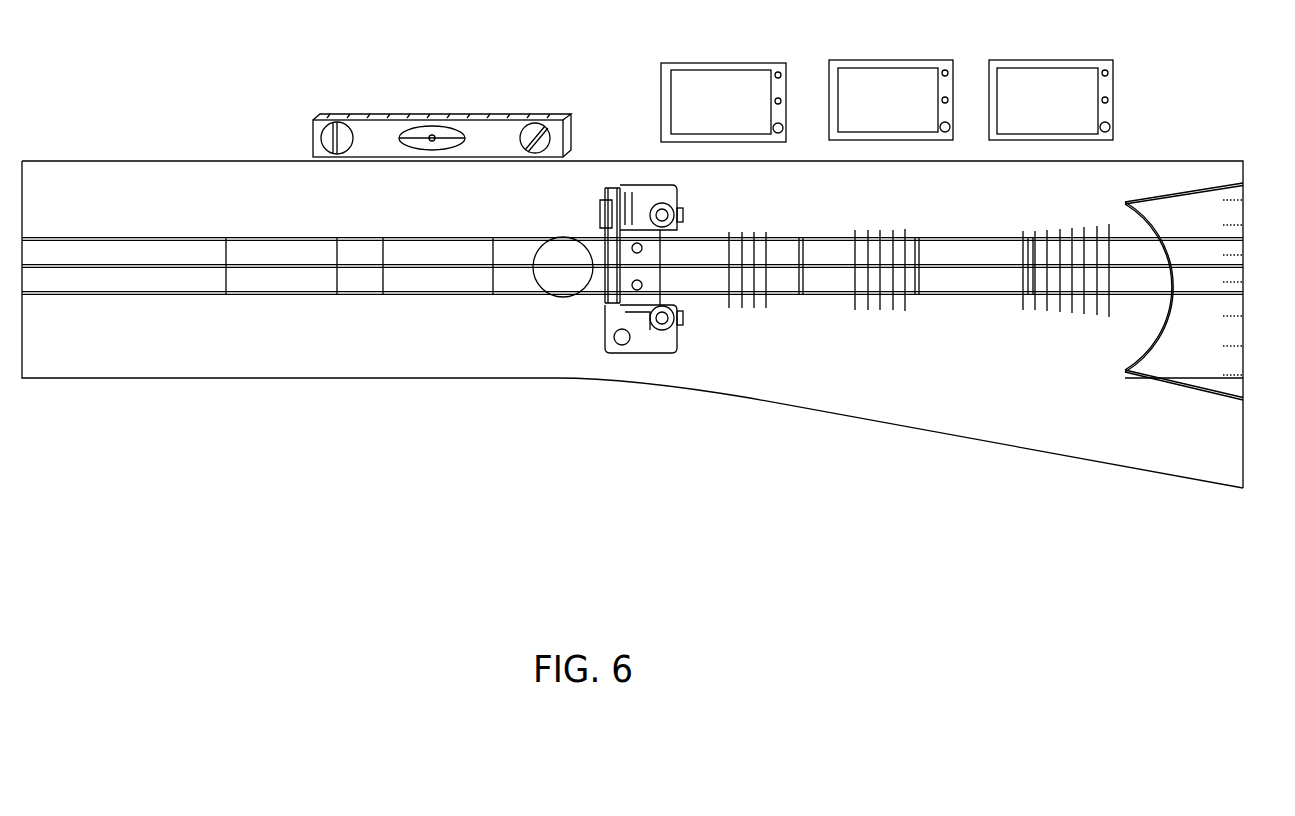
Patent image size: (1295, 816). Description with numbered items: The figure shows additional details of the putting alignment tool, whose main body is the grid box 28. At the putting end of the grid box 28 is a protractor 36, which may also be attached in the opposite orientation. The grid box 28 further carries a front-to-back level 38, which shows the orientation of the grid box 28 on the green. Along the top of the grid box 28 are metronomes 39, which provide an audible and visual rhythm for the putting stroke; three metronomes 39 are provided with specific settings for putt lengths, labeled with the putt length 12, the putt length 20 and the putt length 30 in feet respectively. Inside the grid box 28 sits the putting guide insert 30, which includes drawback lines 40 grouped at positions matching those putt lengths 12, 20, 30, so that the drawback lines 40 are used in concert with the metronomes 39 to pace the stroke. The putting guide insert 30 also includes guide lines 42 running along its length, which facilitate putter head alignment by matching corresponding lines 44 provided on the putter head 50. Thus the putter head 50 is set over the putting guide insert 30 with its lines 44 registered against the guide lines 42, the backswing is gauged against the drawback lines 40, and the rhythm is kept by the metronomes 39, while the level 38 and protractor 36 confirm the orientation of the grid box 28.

The fret position 12 is at (747, 288).
The fret position 20 is at (880, 286).
The putting guide insert 30 is at (1066, 284).
The grid box 28 is at (467, 462).
The protractor 36 is at (1205, 205).
The front-to-back level 38 is at (350, 110).
The metronomes 39 is at (720, 65).
The drawback lines 40 is at (1038, 344).
The guide lines 42 is at (368, 298).
The corresponding lines 44 is at (603, 257).
The putter head 50 is at (593, 213).